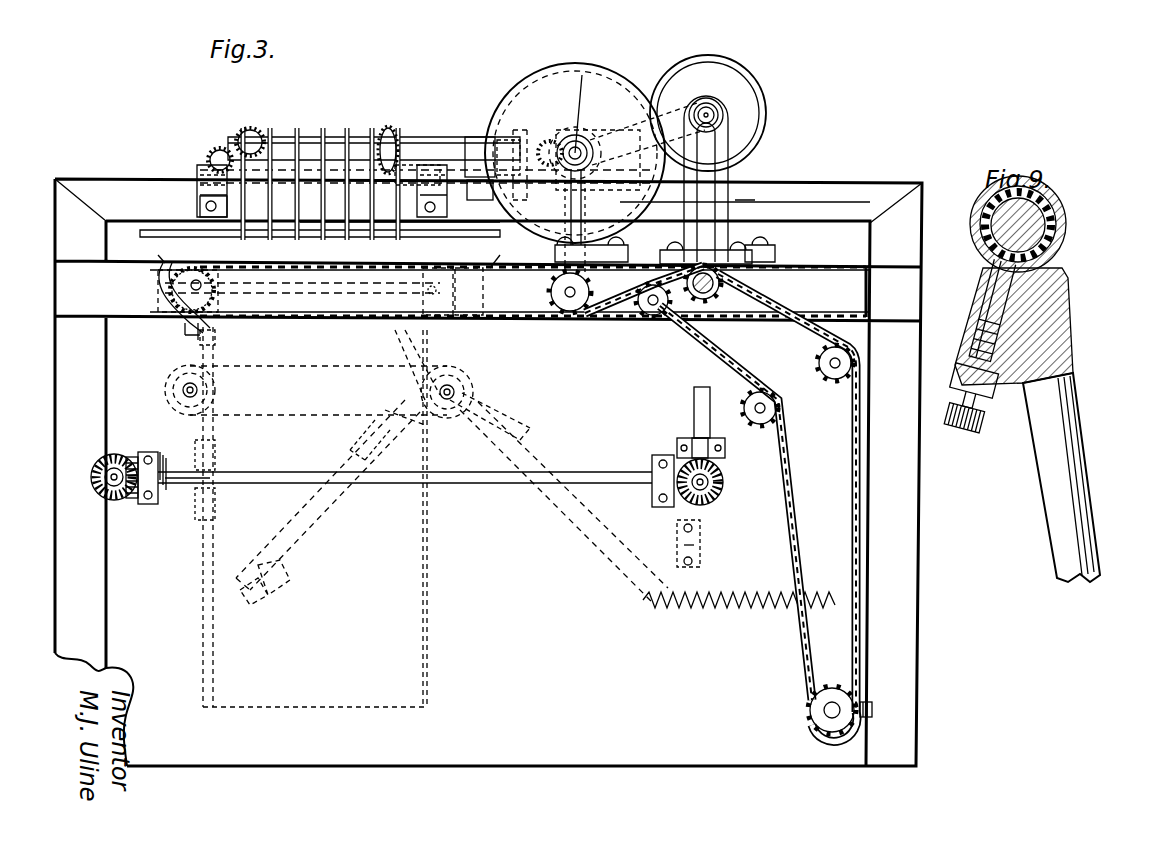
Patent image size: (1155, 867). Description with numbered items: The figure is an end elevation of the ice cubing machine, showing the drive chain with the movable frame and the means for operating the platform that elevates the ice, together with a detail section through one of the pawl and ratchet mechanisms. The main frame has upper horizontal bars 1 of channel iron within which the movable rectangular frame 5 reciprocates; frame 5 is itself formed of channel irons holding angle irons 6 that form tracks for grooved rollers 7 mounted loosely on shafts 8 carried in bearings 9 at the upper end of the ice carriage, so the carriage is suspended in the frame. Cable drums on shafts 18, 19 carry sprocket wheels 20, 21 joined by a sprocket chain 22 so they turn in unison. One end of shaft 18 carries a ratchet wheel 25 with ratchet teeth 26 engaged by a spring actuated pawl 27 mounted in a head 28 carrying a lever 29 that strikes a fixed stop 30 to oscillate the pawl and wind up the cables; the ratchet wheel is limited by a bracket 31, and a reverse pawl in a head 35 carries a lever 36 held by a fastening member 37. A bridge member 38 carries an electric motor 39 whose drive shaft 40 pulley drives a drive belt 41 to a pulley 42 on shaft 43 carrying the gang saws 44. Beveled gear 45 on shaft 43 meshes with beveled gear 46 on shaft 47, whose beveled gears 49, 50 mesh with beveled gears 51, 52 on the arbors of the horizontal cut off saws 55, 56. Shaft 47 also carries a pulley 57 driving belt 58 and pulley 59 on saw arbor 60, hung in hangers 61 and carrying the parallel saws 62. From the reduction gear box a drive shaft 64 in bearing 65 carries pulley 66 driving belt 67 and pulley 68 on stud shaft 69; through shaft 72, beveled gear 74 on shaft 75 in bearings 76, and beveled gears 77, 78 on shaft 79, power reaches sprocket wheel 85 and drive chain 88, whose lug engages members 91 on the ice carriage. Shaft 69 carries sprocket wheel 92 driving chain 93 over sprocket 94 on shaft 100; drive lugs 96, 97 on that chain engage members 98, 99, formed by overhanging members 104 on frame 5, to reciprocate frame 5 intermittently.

In FIG. 3, the upper horizontal bars 1 is at (488, 472).
In FIG. 3, the rectangular frame 5 is at (160, 290).
In FIG. 3, the angle irons 6 is at (548, 300).
In FIG. 3, the grooved rollers 7 is at (500, 249).
In FIG. 3, the shafts 8 is at (315, 280).
In FIG. 3, the bearings 9 is at (450, 272).
In FIG. 3, the shaft 18 is at (470, 390).
In FIG. 9, the shaft 18 is at (1050, 215).
In FIG. 3, the shaft 19 is at (165, 383).
In FIG. 3, the sprocket wheel 20 is at (470, 378).
In FIG. 3, the sprocket wheel 21 is at (165, 405).
In FIG. 3, the sprocket chain 22 is at (320, 370).
In FIG. 9, the ratchet wheel 25 is at (995, 220).
In FIG. 9, the ratchet teeth 26 is at (1060, 250).
In FIG. 9, the spring actuated pawl 27 is at (1040, 300).
In FIG. 3, the head 28 is at (515, 428).
In FIG. 9, the head 28 is at (1075, 338).
In FIG. 3, the lever 29 is at (555, 525).
In FIG. 9, the lever 29 is at (1085, 465).
In FIG. 3, the fixed stop 30 is at (703, 545).
In FIG. 3, the bracket 31 is at (360, 447).
In FIG. 3, the head 35 is at (428, 355).
In FIG. 3, the lever 36 is at (355, 520).
In FIG. 3, the fastening member 37 is at (282, 585).
In FIG. 3, the bridge member 38 is at (745, 208).
In FIG. 3, the electric motor 39 is at (750, 98).
In FIG. 3, the drive shaft (pulley) 40 is at (735, 78).
In FIG. 3, the drive belt 41 is at (640, 95).
In FIG. 3, the pulley 42 is at (573, 114).
In FIG. 3, the shaft 43 is at (595, 150).
In FIG. 3, the gang saws 44 is at (572, 68).
In FIG. 3, the beveled gear 45 is at (630, 142).
In FIG. 3, the beveled gear 46 is at (552, 140).
In FIG. 3, the shaft 47 is at (432, 138).
In FIG. 3, the beveled gear 49 is at (385, 128).
In FIG. 3, the beveled gear 50 is at (240, 135).
In FIG. 3, the beveled gear 51 is at (405, 160).
In FIG. 3, the beveled gear 52 is at (212, 152).
In FIG. 3, the cut off saw 55 is at (400, 243).
In FIG. 3, the cut off saw 56 is at (250, 236).
In FIG. 3, the pulley 57 is at (508, 136).
In FIG. 3, the belt 58 is at (520, 128).
In FIG. 3, the pulley 59 is at (578, 222).
In FIG. 3, the saw arbor 60 is at (482, 196).
In FIG. 3, the hangers 61 is at (197, 170).
In FIG. 3, the saws 62 is at (282, 130).
In FIG. 3, the drive shaft 64 is at (720, 116).
In FIG. 3, the bearing 65 is at (770, 160).
In FIG. 3, the pulley 66 is at (705, 98).
In FIG. 3, the belt 67 is at (684, 238).
In FIG. 3, the pulley 68 is at (662, 320).
In FIG. 3, the stud shaft 69 is at (752, 260).
In FIG. 3, the shaft 72 is at (693, 405).
In FIG. 3, the beveled gear 74 is at (712, 500).
In FIG. 3, the shaft 75 is at (488, 485).
In FIG. 3, the bearings 76 is at (155, 458).
In FIG. 3, the beveled gear 77 is at (145, 510).
In FIG. 3, the beveled gear 78 is at (105, 500).
In FIG. 3, the shaft 79 is at (105, 470).
In FIG. 3, the sprocket wheel 85 is at (218, 458).
In FIG. 3, the drive chain 88 is at (215, 498).
In FIG. 3, the members 91 is at (220, 440).
In FIG. 3, the sprocket wheel 92 is at (710, 300).
In FIG. 3, the drive chain 93 is at (790, 330).
In FIG. 3, the sprocket 94 is at (820, 720).
In FIG. 3, the drive lug 96 is at (872, 710).
In FIG. 3, the drive lug 97 is at (185, 335).
In FIG. 3, the member 98 is at (158, 250).
In FIG. 3, the member 99 is at (212, 328).
In FIG. 3, the shaft 100 is at (815, 708).
In FIG. 3, the overhanging members 104 is at (200, 206).